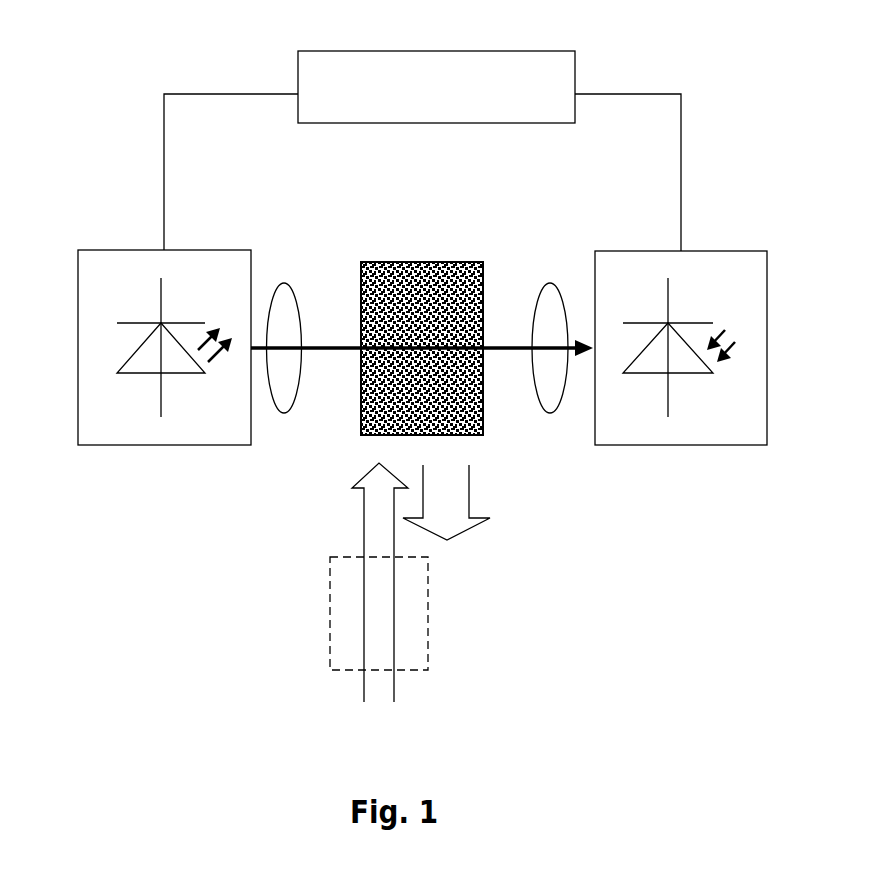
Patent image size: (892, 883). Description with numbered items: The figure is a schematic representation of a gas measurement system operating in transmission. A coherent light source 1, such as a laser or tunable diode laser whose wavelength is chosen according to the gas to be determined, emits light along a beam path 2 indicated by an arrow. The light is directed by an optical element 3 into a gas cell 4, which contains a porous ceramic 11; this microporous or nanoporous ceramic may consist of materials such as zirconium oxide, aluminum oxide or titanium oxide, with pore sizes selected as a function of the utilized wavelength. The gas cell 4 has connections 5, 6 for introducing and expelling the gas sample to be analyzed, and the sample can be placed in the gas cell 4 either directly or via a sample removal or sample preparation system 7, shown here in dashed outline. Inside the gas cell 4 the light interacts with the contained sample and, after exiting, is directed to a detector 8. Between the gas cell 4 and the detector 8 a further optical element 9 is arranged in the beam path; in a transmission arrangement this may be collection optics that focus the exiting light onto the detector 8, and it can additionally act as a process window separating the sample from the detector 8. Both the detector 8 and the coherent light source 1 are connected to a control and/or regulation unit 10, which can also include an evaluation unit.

The coherent light source 1 is at (118, 418).
The beam path 2 is at (337, 346).
The optical element 3 is at (287, 414).
The gas cell 4 is at (470, 261).
The connection 5 is at (372, 682).
The connection 6 is at (445, 502).
The sample removal or sample preparation system 7 is at (428, 612).
The detector 8 is at (737, 283).
The further optical element 9 is at (552, 413).
The control and/or regulation unit 10 is at (437, 77).
The porous ceramic 11 is at (415, 310).